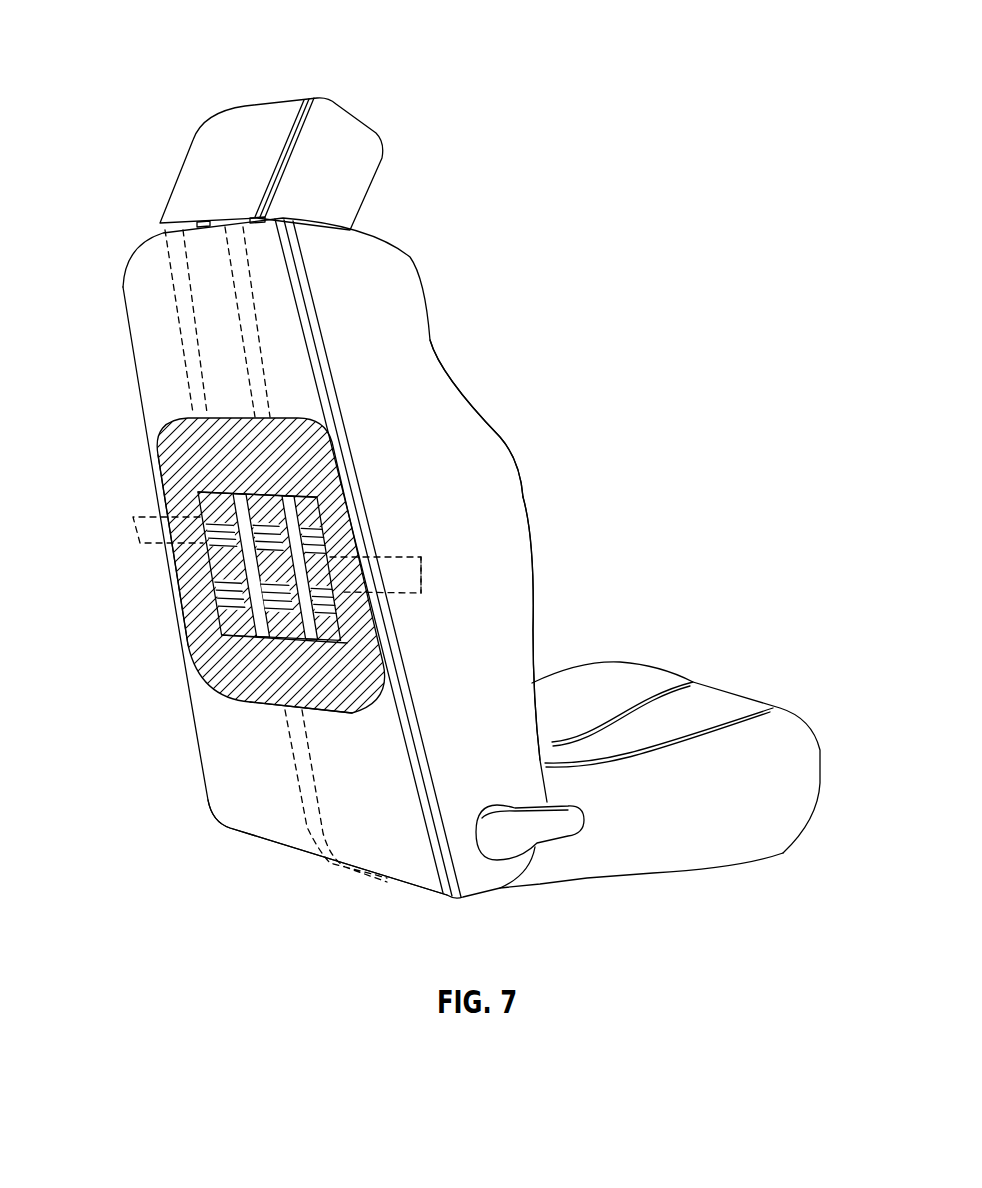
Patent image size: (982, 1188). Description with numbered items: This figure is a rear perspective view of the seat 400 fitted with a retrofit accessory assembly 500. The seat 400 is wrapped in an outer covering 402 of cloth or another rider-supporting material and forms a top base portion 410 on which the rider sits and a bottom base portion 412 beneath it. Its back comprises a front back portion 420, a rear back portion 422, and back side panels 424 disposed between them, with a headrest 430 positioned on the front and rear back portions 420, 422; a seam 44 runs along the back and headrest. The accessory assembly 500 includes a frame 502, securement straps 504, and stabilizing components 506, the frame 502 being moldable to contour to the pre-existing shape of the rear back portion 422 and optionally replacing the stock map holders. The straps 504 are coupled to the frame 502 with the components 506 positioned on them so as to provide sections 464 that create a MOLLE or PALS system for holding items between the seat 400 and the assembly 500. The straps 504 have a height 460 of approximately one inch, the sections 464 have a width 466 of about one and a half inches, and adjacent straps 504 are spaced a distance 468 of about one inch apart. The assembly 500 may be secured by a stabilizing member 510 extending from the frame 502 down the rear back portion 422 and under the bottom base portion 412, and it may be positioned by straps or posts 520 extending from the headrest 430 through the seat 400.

The seat 400 is at (481, 92).
The outer covering 402 is at (500, 597).
The top base portion 410 is at (718, 672).
The bottom base portion 412 is at (598, 888).
The front back portion 420 is at (433, 306).
The rear back portion 422 is at (286, 751).
The back side panels 424 is at (487, 455).
The headrest 430 is at (348, 122).
The seam 44 is at (307, 318).
The height 460 is at (133, 530).
The sections 464 is at (273, 607).
The width 466 is at (226, 578).
The distance 468 is at (425, 575).
The retrofit accessory assembly 500 is at (157, 569).
The frame 502 is at (177, 450).
The securement straps 504 is at (220, 520).
The stabilizing components 506 is at (253, 613).
The stabilizing member 510 is at (318, 825).
The straps or posts 520 is at (177, 287).